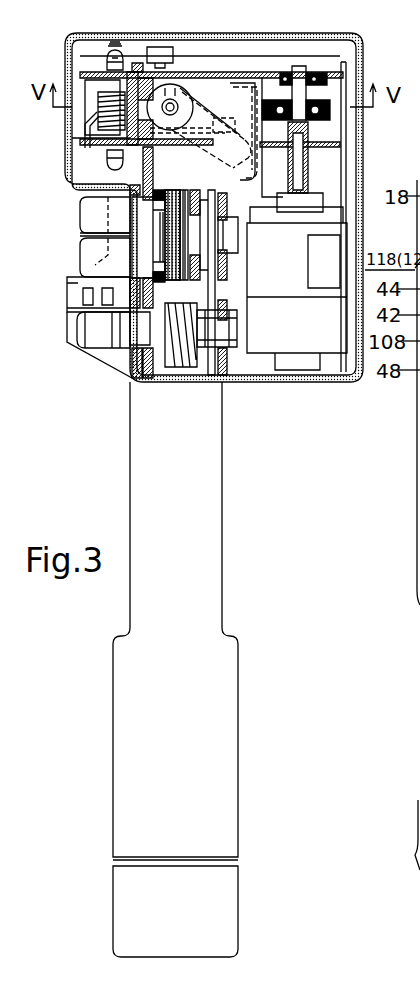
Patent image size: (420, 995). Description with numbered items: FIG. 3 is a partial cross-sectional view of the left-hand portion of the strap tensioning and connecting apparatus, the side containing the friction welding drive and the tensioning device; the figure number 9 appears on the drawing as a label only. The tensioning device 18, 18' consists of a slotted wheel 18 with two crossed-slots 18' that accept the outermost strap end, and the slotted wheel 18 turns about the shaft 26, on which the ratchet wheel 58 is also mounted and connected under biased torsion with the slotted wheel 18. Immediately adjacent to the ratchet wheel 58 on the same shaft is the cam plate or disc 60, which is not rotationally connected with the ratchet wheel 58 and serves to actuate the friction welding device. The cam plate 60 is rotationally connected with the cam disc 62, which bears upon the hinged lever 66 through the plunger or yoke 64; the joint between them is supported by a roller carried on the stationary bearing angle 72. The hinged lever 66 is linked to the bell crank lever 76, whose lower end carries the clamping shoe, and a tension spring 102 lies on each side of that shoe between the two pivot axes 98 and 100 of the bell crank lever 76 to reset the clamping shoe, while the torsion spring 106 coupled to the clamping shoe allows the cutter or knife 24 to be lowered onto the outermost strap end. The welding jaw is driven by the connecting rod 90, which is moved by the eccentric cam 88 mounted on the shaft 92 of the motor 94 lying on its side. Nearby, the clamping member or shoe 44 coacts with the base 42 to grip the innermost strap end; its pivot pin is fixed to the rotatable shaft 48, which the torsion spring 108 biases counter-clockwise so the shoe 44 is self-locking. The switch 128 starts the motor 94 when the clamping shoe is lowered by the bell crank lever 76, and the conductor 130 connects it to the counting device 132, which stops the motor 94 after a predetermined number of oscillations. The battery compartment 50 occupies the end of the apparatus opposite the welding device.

The portable rotary tool 9 is at (198, 207).
The slotted wheel 18 is at (82, 215).
The crossed-slots 18' is at (82, 255).
The cutter or knife 24 is at (84, 140).
The shaft 26 is at (228, 252).
The base 42 is at (78, 280).
The clamping member or shoe 44 is at (75, 308).
The rotatable shaft 48 is at (100, 336).
The battery compartment 50 is at (232, 888).
The ratchet wheel 58 is at (170, 190).
The cam plate or disc 60 is at (184, 190).
The cam disc or plate 62 is at (207, 383).
The plunger or yoke 64 is at (212, 157).
The hinged or jointed lever 66 is at (215, 100).
The stationary mounting or bearing angle 72 is at (256, 160).
The bell crank lever 76 is at (133, 63).
The eccentric mechanism or cam 88 is at (300, 97).
The driving or connecting rod 90 is at (222, 100).
The shaft 92 is at (300, 190).
The motor 94 is at (333, 345).
The hinge or pivot axis 98 is at (74, 34).
The hinge or pivot axis 100 is at (107, 55).
The tension spring 102 is at (110, 50).
The torsion spring 106 is at (95, 118).
The torsion spring 108 is at (180, 385).
The switch 128 is at (160, 50).
The wire or electrical conductor 130 is at (283, 54).
The counting device 132 is at (340, 236).